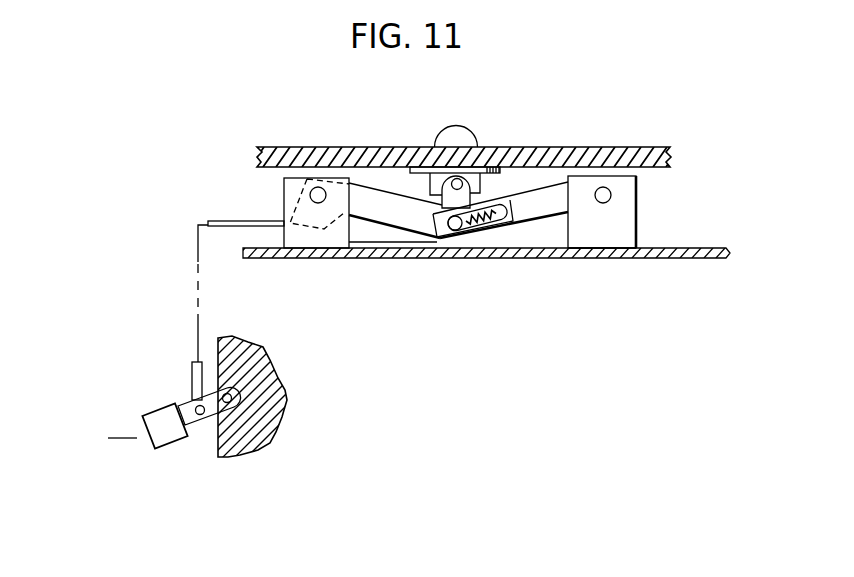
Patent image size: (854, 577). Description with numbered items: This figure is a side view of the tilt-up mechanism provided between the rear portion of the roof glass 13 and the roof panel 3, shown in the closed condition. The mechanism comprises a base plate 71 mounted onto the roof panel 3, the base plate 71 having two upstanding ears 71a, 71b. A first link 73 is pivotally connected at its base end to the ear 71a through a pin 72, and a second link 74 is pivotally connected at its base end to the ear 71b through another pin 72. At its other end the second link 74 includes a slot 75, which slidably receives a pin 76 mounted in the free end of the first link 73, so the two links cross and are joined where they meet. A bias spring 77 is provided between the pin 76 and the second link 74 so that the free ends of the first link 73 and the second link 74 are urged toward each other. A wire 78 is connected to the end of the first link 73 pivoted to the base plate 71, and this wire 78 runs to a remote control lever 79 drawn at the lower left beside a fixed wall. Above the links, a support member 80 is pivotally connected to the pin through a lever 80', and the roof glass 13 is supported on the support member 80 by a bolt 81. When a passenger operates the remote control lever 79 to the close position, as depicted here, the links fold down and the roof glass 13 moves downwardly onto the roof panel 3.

The roof panel 3 is at (711, 250).
The roof glass 13 is at (579, 155).
The base plate 71 is at (613, 243).
The ear 71a is at (284, 201).
The ear 71b is at (643, 231).
The pin 72 is at (318, 204).
The first link 73 is at (392, 218).
The second link 74 is at (544, 208).
The slot 75 is at (467, 240).
The pin 76 is at (453, 231).
The bias spring 77 is at (488, 229).
The wire 78 is at (222, 228).
The remote control lever 79 is at (194, 420).
The support member 80 is at (450, 142).
The lever 80' is at (503, 153).
The bolt 81 is at (462, 133).